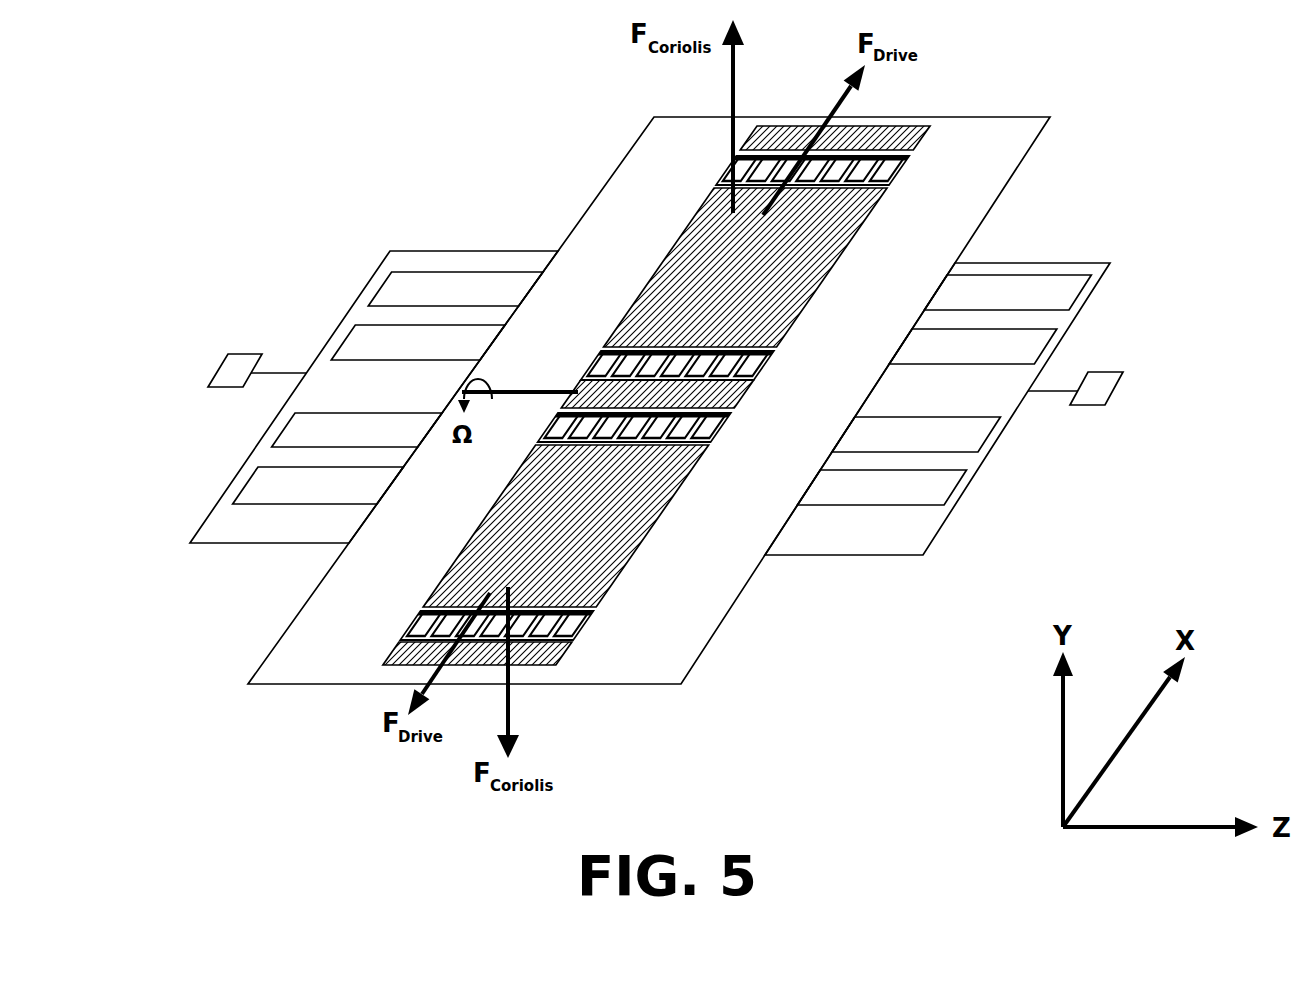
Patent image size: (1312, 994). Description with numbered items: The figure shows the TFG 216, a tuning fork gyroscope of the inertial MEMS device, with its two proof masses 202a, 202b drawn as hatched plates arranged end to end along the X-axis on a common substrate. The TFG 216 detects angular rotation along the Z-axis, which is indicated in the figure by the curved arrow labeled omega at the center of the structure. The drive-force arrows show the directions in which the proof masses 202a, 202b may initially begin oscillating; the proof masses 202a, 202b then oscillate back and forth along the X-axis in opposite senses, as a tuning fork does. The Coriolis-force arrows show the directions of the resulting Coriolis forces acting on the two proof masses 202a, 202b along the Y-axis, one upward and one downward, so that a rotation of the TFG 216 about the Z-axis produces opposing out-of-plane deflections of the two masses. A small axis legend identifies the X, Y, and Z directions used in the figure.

The TFG 216 is at (298, 180).
The proof mass 202a is at (650, 528).
The proof mass 202b is at (638, 300).